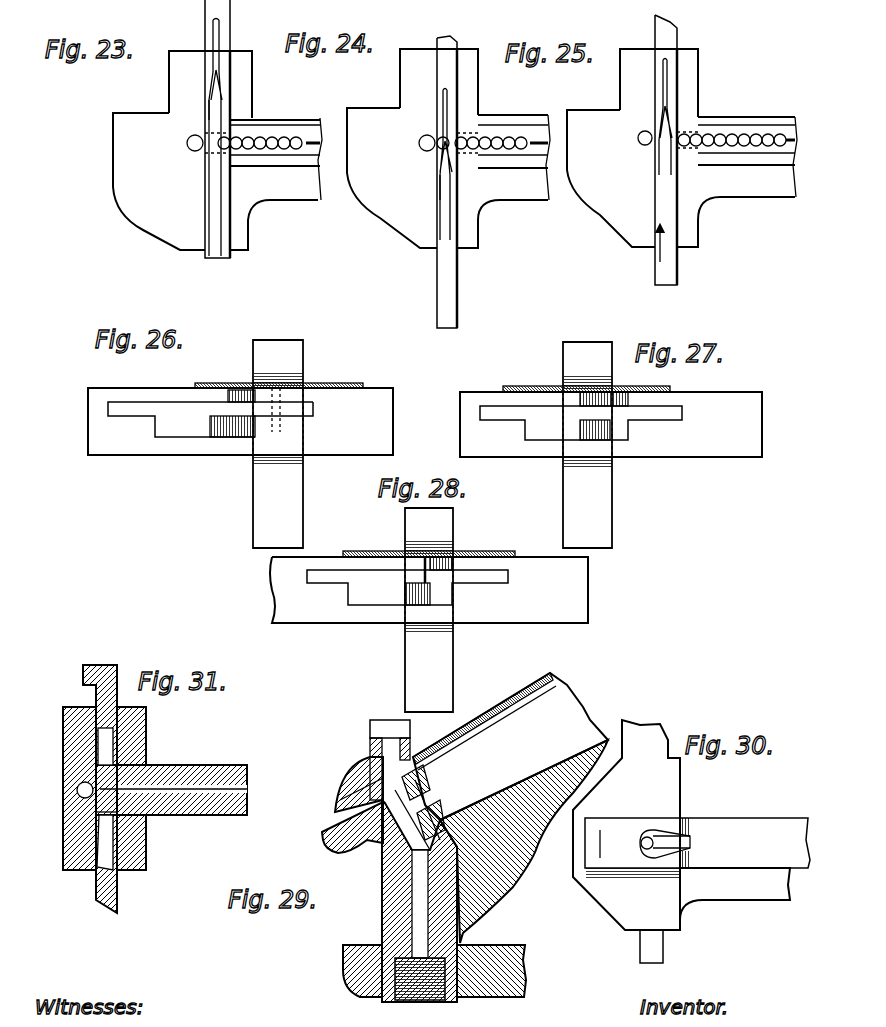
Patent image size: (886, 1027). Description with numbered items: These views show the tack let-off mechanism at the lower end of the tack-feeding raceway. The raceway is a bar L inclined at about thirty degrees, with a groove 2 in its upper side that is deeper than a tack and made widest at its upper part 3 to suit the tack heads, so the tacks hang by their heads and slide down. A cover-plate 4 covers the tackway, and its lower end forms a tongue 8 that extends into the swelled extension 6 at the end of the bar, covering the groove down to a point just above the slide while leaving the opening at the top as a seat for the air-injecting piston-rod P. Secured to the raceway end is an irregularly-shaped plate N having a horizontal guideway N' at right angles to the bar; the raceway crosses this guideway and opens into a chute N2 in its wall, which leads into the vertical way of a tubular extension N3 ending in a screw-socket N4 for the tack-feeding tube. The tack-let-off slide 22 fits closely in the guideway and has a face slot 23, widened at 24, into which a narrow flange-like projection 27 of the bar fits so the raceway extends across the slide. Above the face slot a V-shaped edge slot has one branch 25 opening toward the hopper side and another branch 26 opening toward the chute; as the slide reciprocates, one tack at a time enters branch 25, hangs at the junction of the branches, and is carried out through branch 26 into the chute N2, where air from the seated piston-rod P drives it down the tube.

In FIG. 23, the irregularly-shaped plate N is at (182, 150).
In FIG. 24, the irregularly-shaped plate N is at (416, 148).
In FIG. 25, the irregularly-shaped plate N is at (632, 148).
In FIG. 31, the irregularly-shaped plate N is at (64, 788).
In FIG. 29, the irregularly-shaped plate N is at (414, 899).
In FIG. 30, the irregularly-shaped plate N is at (681, 825).
In FIG. 23, the horizontal guideway N' is at (276, 141).
In FIG. 24, the horizontal guideway N' is at (503, 181).
In FIG. 25, the horizontal guideway N' is at (737, 182).
In FIG. 31, the horizontal guideway N' is at (99, 788).
In FIG. 23, the chute N2 is at (179, 144).
In FIG. 24, the chute N2 is at (412, 144).
In FIG. 25, the chute N2 is at (632, 151).
In FIG. 31, the chute N2 is at (82, 787).
In FIG. 29, the chute N2 is at (359, 813).
In FIG. 29, the tubular extension N3 is at (403, 891).
In FIG. 29, the screw-socket N4 is at (420, 985).
In FIG. 23, the tack-feeding raceway bar L is at (262, 130).
In FIG. 24, the tack-feeding raceway bar L is at (492, 130).
In FIG. 25, the tack-feeding raceway bar L is at (736, 129).
In FIG. 26, the tack-feeding raceway bar L is at (278, 444).
In FIG. 27, the tack-feeding raceway bar L is at (587, 445).
In FIG. 28, the tack-feeding raceway bar L is at (429, 610).
In FIG. 31, the tack-feeding raceway bar L is at (171, 779).
In FIG. 29, the tack-feeding raceway bar L is at (524, 841).
In FIG. 29, the piston-rod P is at (390, 757).
In FIG. 23, the tack-let-off slide 22 is at (212, 129).
In FIG. 24, the tack-let-off slide 22 is at (459, 182).
In FIG. 25, the tack-let-off slide 22 is at (677, 150).
In FIG. 26, the tack-let-off slide 22 is at (240, 421).
In FIG. 27, the tack-let-off slide 22 is at (611, 424).
In FIG. 28, the tack-let-off slide 22 is at (429, 590).
In FIG. 31, the tack-let-off slide 22 is at (110, 789).
In FIG. 30, the tack-let-off slide 22 is at (651, 946).
In FIG. 26, the face longitudinal slot 23 is at (135, 410).
In FIG. 27, the face longitudinal slot 23 is at (581, 423).
In FIG. 28, the face longitudinal slot 23 is at (407, 587).
In FIG. 26, the widened portion of face-slot 24 is at (213, 428).
In FIG. 27, the widened portion of face-slot 24 is at (572, 430).
In FIG. 28, the widened portion of face-slot 24 is at (395, 595).
In FIG. 23, the receiving branch of edge slot 25 is at (222, 100).
In FIG. 24, the receiving branch of edge slot 25 is at (455, 172).
In FIG. 25, the receiving branch of edge slot 25 is at (672, 160).
In FIG. 23, the delivering branch of edge slot 26 is at (210, 98).
In FIG. 24, the delivering branch of edge slot 26 is at (420, 186).
In FIG. 26, the flange-like projection 27 is at (241, 404).
In FIG. 27, the flange-like projection 27 is at (581, 406).
In FIG. 28, the flange-like projection 27 is at (416, 574).
In FIG. 31, the flange-like projection 27 is at (80, 812).
In FIG. 29, the flange-like projection 27 is at (428, 805).
In FIG. 31, the groove 2 is at (232, 790).
In FIG. 29, the groove 2 is at (510, 746).
In FIG. 29, the widest upper part of groove 3 is at (487, 728).
In FIG. 29, the cover-plate 4 is at (483, 718).
In FIG. 30, the cover-plate 4 is at (697, 843).
In FIG. 26, the swelled extension 6 is at (279, 373).
In FIG. 27, the swelled extension 6 is at (586, 375).
In FIG. 28, the swelled extension 6 is at (429, 541).
In FIG. 29, the swelled extension 6 is at (361, 773).
In FIG. 30, the swelled extension 6 is at (608, 844).
In FIG. 29, the tongue 8 is at (428, 748).
In FIG. 30, the tongue 8 is at (665, 844).